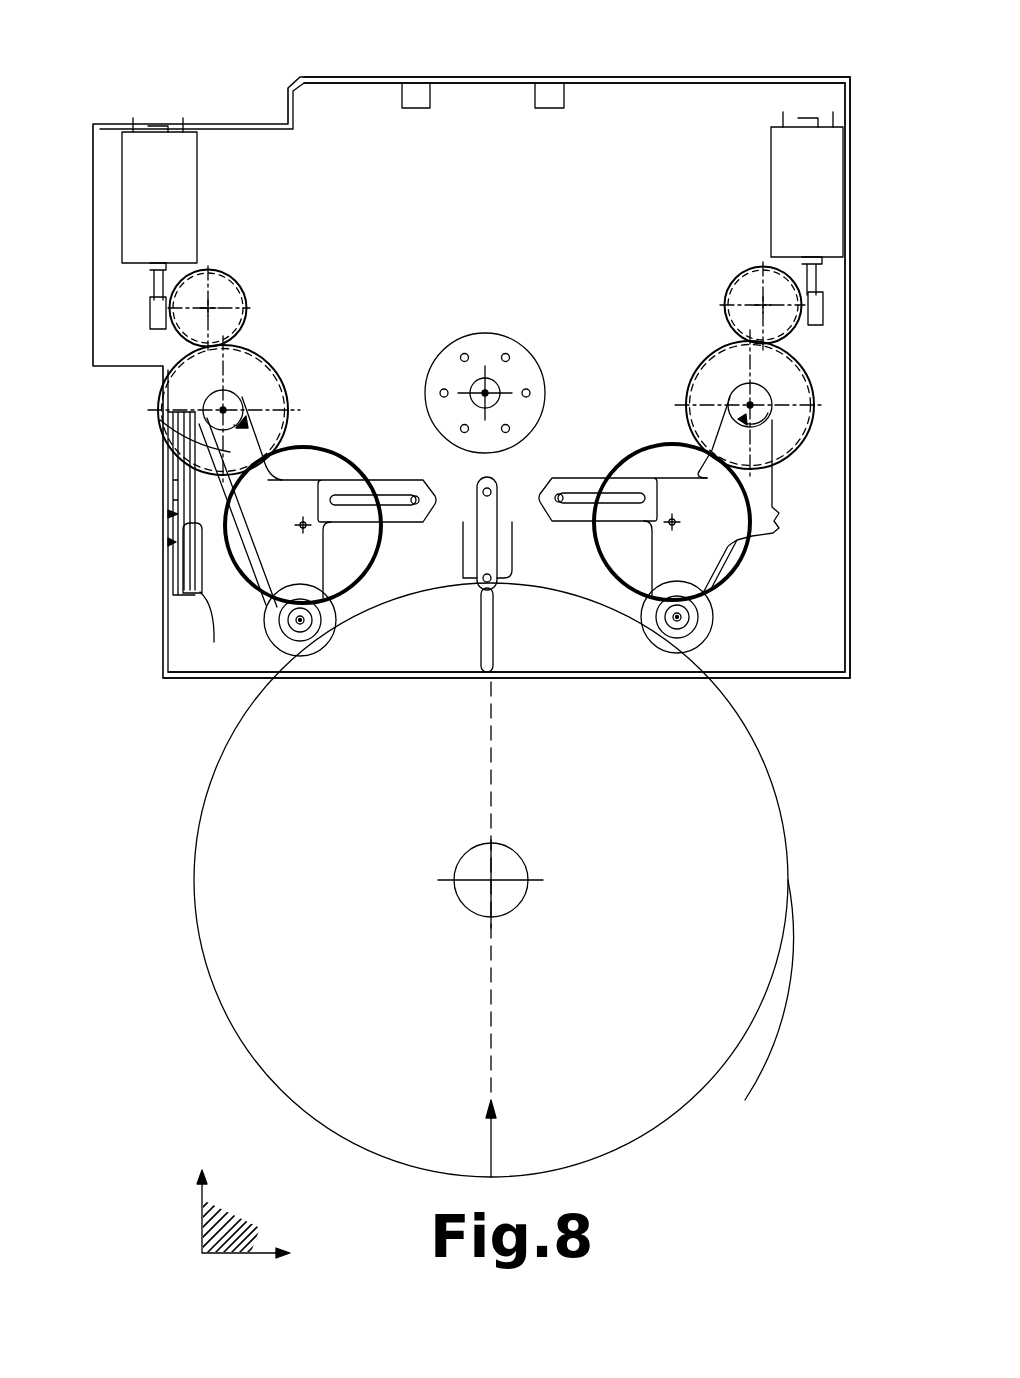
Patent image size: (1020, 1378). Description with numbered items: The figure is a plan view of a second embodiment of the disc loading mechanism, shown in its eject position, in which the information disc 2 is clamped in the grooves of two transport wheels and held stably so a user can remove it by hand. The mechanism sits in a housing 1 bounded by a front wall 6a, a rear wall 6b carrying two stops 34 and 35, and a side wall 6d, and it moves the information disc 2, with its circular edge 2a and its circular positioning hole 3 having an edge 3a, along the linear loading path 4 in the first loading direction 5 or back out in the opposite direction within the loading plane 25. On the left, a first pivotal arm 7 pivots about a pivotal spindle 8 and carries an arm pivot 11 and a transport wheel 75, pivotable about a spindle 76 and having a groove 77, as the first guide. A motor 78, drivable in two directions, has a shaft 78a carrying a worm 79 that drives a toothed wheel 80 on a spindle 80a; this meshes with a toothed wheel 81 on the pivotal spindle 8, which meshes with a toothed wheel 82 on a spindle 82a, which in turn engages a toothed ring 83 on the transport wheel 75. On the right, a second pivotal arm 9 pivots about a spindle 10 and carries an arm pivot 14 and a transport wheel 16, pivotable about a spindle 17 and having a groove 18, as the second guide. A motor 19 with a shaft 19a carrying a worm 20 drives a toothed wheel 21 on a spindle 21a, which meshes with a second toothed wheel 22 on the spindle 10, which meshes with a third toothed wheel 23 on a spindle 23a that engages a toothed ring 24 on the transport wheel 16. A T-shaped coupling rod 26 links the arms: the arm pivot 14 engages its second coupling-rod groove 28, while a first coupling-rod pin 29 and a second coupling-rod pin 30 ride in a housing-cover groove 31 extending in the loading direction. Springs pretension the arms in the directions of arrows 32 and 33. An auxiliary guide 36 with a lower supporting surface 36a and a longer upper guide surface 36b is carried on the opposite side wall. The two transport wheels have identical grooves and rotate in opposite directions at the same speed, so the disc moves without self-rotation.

The housing 1 is at (86, 121).
The information disc 2 is at (764, 812).
The circular edge 2a is at (786, 933).
The circular positioning hole 3 is at (508, 893).
The edge of positioning hole 3a is at (470, 914).
The linear loading path 4 is at (496, 790).
The first loading direction 5 is at (498, 1143).
The front wall 6a is at (802, 678).
The rear wall 6b is at (770, 80).
The side wall 6d is at (852, 350).
The first pivotal arm 7 is at (250, 447).
The pivotal spindle 8 is at (218, 404).
The second pivotal arm 9 is at (762, 535).
The spindle 10 is at (758, 402).
The arm pivot 11 is at (417, 494).
The arm pivot 14 is at (560, 493).
The transport wheel 16 is at (688, 646).
The spindle 17 is at (675, 620).
The groove 18 is at (655, 624).
The motor 19 is at (830, 178).
The motor shaft 19a is at (814, 283).
The worm 20 is at (813, 318).
The toothed wheel 21 is at (740, 316).
The spindle 21a is at (762, 302).
The second toothed wheel 22 is at (700, 392).
The third toothed wheel 23 is at (656, 462).
The spindle 23a is at (680, 522).
The toothed ring 24 is at (692, 623).
The loading plane 25 is at (203, 1222).
The T-shaped coupling rod 26 is at (461, 528).
The second coupling-rod groove 28 is at (582, 508).
The first coupling-rod pin 29 is at (497, 490).
The second coupling-rod pin 30 is at (494, 583).
The housing-cover groove 31 is at (498, 556).
The arrow 32 is at (170, 435).
The arrow 33 is at (768, 419).
The stop 34 is at (418, 104).
The stop 35 is at (553, 104).
The auxiliary guide 36 is at (172, 512).
The lower supporting surface 36a is at (205, 630).
The upper guide surface 36b is at (190, 470).
The transport wheel 75 is at (324, 630).
The spindle 76 is at (299, 612).
The groove 77 is at (330, 598).
The motor 78 is at (185, 207).
The motor shaft 78a is at (155, 294).
The worm 79 is at (152, 328).
The toothed wheel 80 is at (232, 298).
The spindle 80a is at (211, 304).
The toothed wheel 81 is at (260, 375).
The toothed wheel 82 is at (318, 466).
The spindle 82a is at (300, 521).
The toothed ring 83 is at (290, 620).